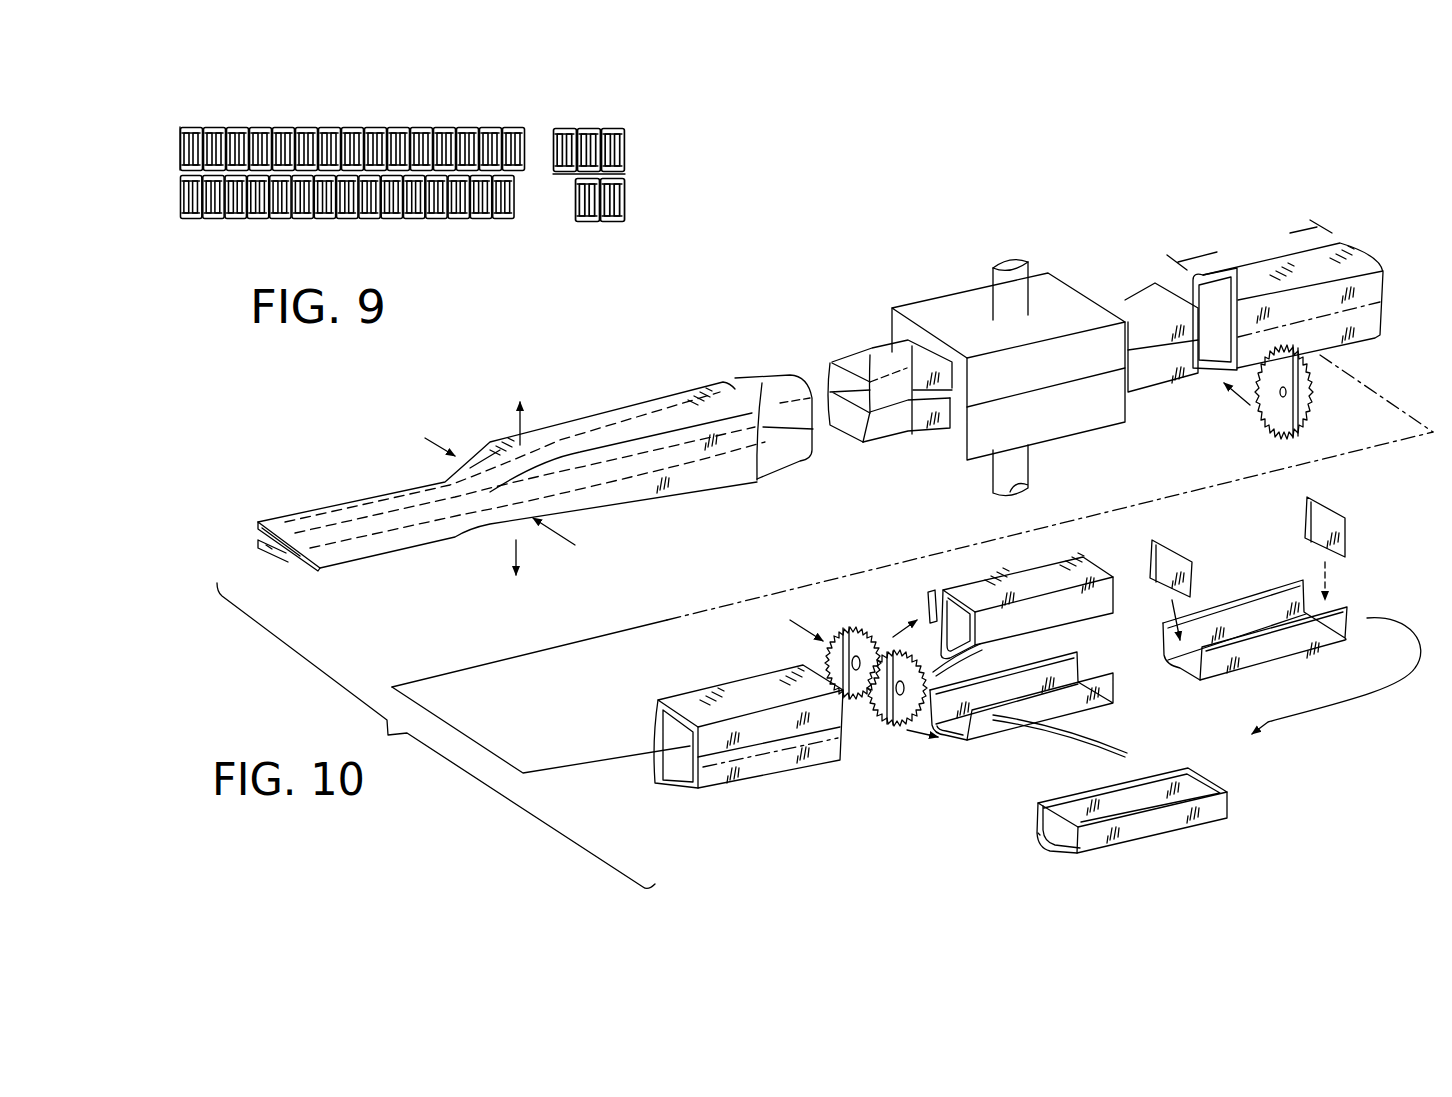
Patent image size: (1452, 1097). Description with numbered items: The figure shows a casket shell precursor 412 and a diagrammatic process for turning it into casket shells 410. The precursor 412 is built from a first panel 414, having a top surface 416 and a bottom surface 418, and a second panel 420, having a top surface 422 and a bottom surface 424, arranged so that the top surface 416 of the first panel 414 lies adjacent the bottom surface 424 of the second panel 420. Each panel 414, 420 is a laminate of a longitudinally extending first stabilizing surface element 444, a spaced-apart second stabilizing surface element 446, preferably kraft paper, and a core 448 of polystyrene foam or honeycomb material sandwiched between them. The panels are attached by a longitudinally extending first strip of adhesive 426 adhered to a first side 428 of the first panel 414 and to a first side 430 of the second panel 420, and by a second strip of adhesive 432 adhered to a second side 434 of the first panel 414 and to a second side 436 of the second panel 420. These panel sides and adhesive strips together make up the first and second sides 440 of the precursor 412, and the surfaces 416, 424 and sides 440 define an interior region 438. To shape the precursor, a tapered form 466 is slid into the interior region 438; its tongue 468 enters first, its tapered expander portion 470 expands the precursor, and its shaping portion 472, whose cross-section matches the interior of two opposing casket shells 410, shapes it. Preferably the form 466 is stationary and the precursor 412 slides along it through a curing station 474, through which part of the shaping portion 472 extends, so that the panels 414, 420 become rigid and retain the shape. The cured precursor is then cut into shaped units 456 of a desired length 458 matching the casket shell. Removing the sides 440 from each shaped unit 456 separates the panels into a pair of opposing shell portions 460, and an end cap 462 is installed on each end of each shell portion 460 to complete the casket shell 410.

In FIG. 10, the casket shell 410 is at (1007, 848).
In FIG. 9, the casket shell precursor 412 is at (592, 83).
In FIG. 10, the casket shell precursor 412 is at (400, 552).
In FIG. 9, the first panel 414 is at (341, 221).
In FIG. 10, the first panel 414 is at (313, 570).
In FIG. 9, the top surface 416 is at (457, 172).
In FIG. 9, the bottom surface 418 is at (460, 230).
In FIG. 9, the second panel 420 is at (338, 127).
In FIG. 10, the second panel 420 is at (280, 521).
In FIG. 9, the top surface 422 is at (404, 125).
In FIG. 9, the bottom surface 424 is at (406, 178).
In FIG. 9, the first strip of adhesive 426 is at (175, 178).
In FIG. 9, the first side 428 is at (186, 182).
In FIG. 9, the first side 430 is at (180, 130).
In FIG. 9, the second strip of adhesive 432 is at (626, 175).
In FIG. 9, the second side 434 is at (626, 201).
In FIG. 9, the second side 436 is at (622, 150).
In FIG. 9, the interior region 438 is at (530, 183).
In FIG. 10, the interior region 438 is at (684, 777).
In FIG. 9, the first and second sides 440 is at (183, 127).
In FIG. 10, the first and second sides 440 is at (940, 612).
In FIG. 9, the first stabilizing surface element 444 is at (276, 172).
In FIG. 9, the second stabilizing surface element 446 is at (248, 188).
In FIG. 9, the core 448 is at (313, 184).
In FIG. 10, the shaped unit 456 is at (1400, 292).
In FIG. 10, the length 458 is at (1228, 306).
In FIG. 10, the shell portion 460 is at (1090, 546).
In FIG. 10, the end cap 462 is at (1300, 518).
In FIG. 10, the form 466 is at (771, 388).
In FIG. 10, the tongue 468 is at (271, 551).
In FIG. 10, the tapered expander portion 470 is at (491, 446).
In FIG. 10, the shaping portion 472 is at (868, 444).
In FIG. 10, the curing station 474 is at (1054, 260).